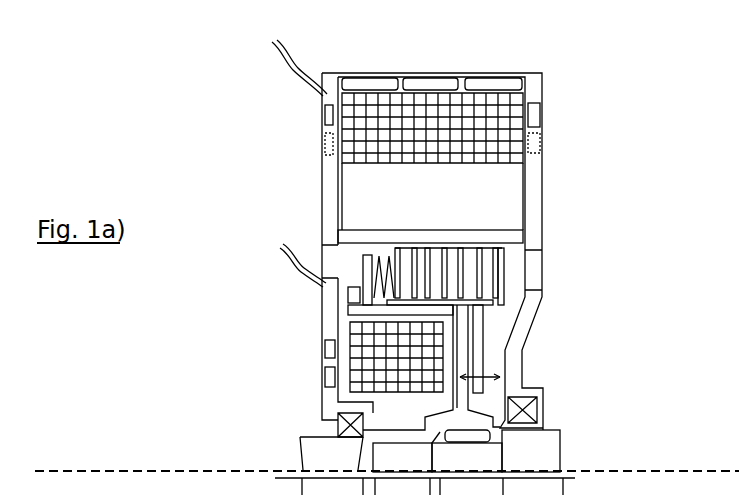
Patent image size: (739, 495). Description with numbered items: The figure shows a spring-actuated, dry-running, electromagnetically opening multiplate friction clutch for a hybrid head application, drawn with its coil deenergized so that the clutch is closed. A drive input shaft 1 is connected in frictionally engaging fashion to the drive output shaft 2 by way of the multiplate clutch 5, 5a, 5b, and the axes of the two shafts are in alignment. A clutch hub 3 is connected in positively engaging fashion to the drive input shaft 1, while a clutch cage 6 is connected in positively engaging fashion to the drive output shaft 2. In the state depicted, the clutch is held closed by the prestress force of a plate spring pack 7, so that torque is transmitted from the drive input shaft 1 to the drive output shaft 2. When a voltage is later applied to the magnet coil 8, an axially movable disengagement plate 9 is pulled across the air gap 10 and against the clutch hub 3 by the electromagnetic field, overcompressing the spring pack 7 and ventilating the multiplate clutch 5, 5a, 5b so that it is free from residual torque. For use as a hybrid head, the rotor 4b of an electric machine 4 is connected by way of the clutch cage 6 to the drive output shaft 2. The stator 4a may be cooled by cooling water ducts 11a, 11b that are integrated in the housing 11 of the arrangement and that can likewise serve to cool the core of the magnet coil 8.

The drive input shaft 1 is at (323, 455).
The drive output shaft 2 is at (535, 452).
The clutch hub 3 is at (463, 358).
The electric machine 4 is at (520, 144).
The stator 4a is at (497, 123).
The rotor 4b is at (497, 175).
The multiplate clutch 5 is at (523, 245).
The multiplate clutch plates 5a is at (505, 235).
The multiplate clutch plates 5b is at (500, 270).
The clutch cage 6 is at (497, 238).
The plate spring pack 7 is at (387, 278).
The magnet coil 8 is at (367, 363).
The disengagement plate 9 is at (477, 335).
The air gap 10 is at (482, 375).
The housing 11 is at (330, 198).
The cooling water duct 11a is at (505, 83).
The cooling water duct 11b is at (330, 378).